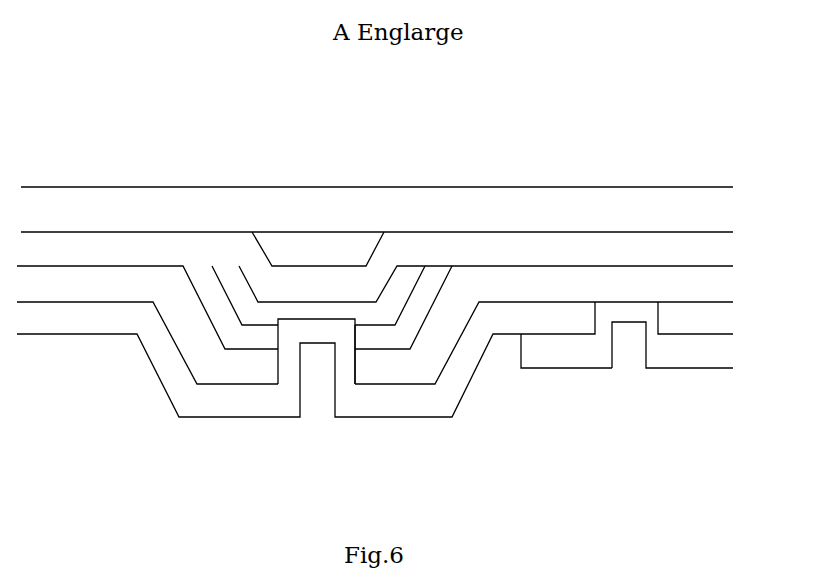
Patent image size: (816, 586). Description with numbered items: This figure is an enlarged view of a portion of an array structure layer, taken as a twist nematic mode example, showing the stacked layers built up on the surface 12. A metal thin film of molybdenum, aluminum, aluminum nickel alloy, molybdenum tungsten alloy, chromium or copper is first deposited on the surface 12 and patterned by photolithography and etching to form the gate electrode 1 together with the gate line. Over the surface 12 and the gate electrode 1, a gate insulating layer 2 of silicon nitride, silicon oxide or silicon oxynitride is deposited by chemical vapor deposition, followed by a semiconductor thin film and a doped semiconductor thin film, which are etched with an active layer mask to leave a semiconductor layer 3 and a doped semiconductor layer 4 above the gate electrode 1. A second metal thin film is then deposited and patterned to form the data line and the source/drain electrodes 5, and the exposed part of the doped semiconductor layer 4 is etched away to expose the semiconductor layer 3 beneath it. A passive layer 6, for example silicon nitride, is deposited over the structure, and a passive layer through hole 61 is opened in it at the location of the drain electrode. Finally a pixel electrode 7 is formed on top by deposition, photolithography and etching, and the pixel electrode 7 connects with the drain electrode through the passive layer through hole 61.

The gate electrode 1 is at (328, 250).
The gate insulating layer 2 is at (160, 250).
The surface 12 is at (503, 232).
The semiconductor layer 3 is at (303, 312).
The doped semiconductor layer 4 is at (368, 340).
The source/drain electrodes 5 is at (202, 353).
The passive layer 6 is at (118, 312).
The pixel electrode 7 is at (580, 352).
The passive layer through hole 61 is at (627, 338).